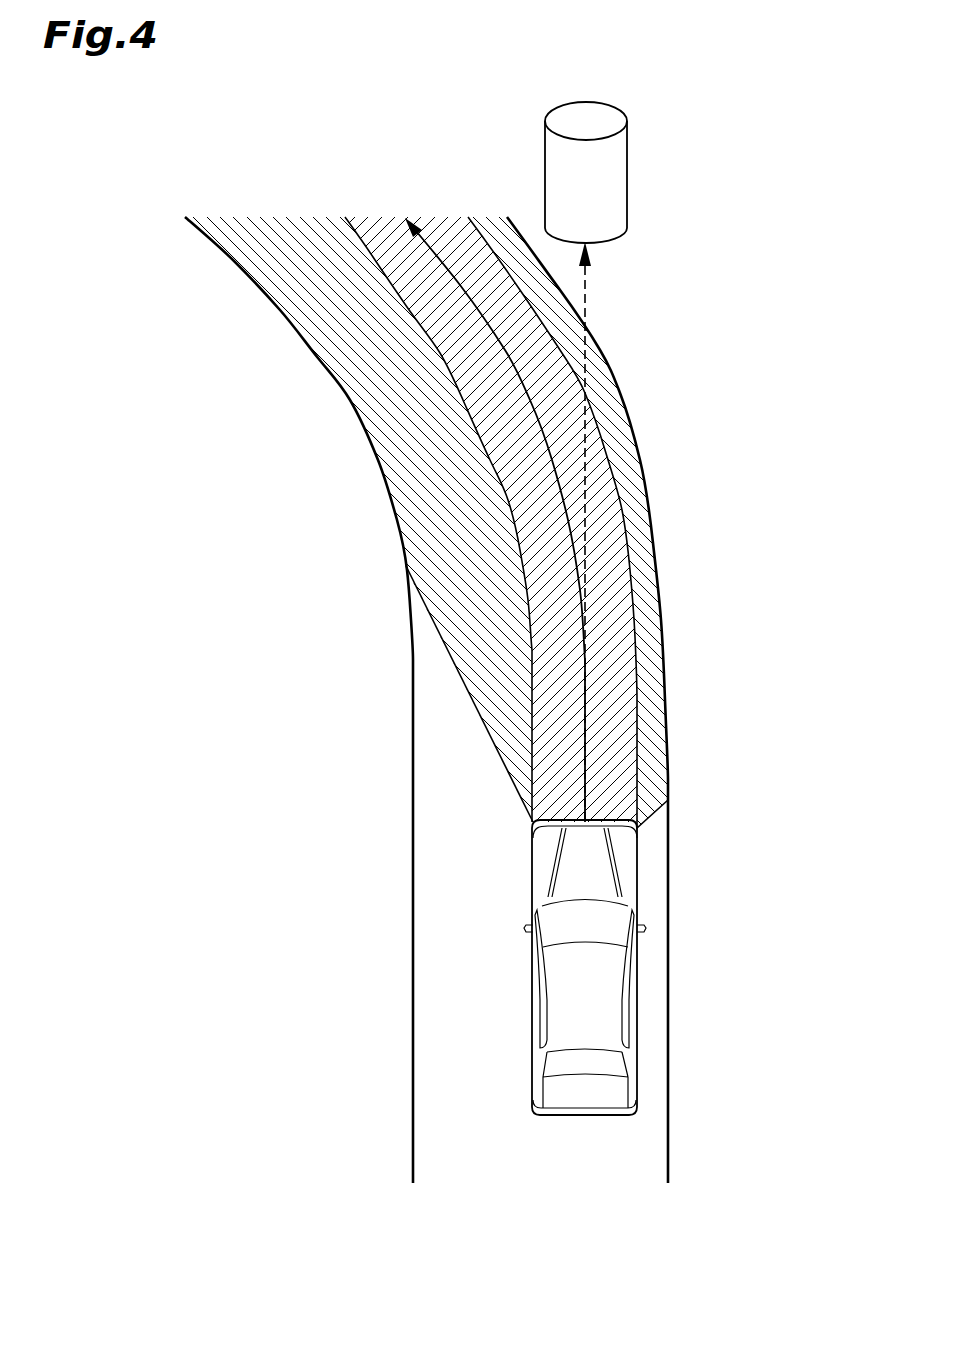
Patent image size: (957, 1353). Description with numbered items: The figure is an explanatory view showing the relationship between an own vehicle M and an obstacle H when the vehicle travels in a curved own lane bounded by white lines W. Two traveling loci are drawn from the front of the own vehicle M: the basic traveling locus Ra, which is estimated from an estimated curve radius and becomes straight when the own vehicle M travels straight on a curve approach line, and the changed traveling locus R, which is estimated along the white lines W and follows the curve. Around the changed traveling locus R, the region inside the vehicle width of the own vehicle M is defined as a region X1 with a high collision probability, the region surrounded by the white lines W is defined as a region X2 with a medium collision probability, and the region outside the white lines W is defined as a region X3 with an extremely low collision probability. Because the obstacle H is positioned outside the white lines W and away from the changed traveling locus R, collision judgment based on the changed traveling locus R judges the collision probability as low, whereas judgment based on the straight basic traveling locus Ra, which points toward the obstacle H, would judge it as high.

The obstacle H is at (628, 163).
The basic traveling locus Ra is at (590, 288).
The changed traveling locus R is at (525, 377).
The region with a high collision probability X1 is at (632, 783).
The region with a medium collision probability X2 is at (457, 650).
The region with an extremely low collision probability X3 is at (400, 1070).
The white lines W is at (413, 790).
The own vehicle M is at (612, 1117).